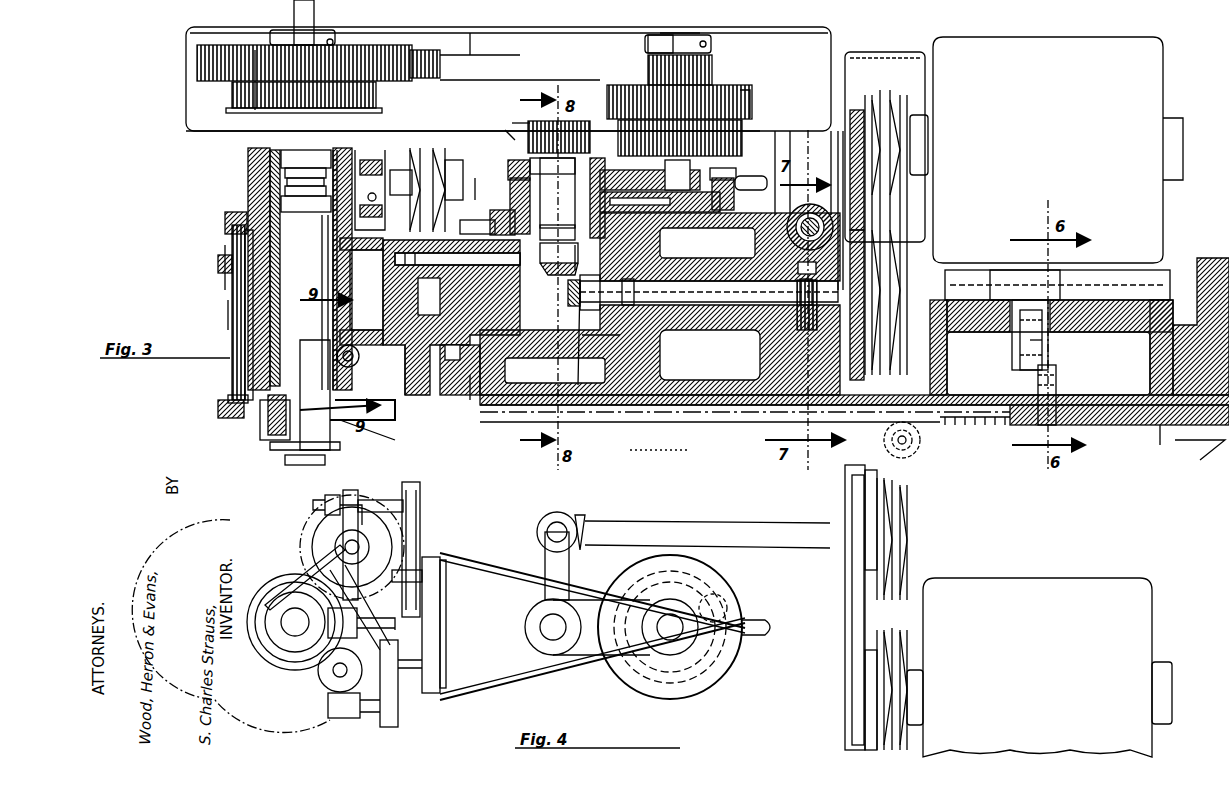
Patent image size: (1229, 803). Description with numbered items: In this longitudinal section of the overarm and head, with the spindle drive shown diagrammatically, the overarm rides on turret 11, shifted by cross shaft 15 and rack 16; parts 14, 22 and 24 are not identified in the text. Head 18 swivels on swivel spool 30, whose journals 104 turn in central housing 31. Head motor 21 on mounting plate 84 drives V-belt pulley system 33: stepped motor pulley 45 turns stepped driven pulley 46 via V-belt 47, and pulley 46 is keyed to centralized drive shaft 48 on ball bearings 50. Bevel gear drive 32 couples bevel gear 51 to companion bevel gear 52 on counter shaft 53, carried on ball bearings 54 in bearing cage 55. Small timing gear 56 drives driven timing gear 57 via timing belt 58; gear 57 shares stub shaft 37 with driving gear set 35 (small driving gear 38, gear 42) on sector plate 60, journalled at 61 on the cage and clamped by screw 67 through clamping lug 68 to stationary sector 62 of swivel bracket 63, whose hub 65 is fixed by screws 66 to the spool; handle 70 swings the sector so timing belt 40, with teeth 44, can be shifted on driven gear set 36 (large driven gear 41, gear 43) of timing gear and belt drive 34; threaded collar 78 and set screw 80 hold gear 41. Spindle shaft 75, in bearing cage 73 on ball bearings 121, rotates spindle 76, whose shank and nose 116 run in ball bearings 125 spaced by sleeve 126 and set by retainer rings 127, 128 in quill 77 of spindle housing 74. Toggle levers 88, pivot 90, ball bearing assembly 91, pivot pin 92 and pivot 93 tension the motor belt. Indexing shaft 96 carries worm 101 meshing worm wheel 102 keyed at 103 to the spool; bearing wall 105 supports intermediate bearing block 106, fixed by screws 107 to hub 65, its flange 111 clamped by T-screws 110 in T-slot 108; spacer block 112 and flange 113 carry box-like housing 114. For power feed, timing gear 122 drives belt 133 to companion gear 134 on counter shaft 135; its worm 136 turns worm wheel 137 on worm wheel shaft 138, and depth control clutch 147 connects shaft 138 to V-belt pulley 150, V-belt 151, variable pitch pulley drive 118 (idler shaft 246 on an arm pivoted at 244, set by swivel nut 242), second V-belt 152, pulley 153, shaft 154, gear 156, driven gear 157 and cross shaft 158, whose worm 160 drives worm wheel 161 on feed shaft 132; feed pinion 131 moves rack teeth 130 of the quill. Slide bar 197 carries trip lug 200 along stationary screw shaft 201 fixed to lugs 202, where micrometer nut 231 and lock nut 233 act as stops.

In FIG. 3, the turret 11 is at (1165, 447).
In FIG. 3, the guide rod 14 is at (920, 440).
In FIG. 3, the cross shaft 15 is at (918, 452).
In FIG. 3, the rack 16 is at (1000, 430).
In FIG. 3, the head 18 is at (245, 190).
In FIG. 3, the head motor 21 is at (1163, 90).
In FIG. 4, the head motor 21 is at (1078, 595).
In FIG. 3, the plate 22 is at (342, 448).
In FIG. 3, the shaft 24 is at (520, 145).
In FIG. 3, the swivel spool 30 is at (660, 350).
In FIG. 3, the central housing 31 is at (720, 247).
In FIG. 3, the bevel gear drive 32 is at (565, 285).
In FIG. 4, the bevel gear drive 32 is at (578, 555).
In FIG. 3, the V-belt pulley system 33 is at (912, 100).
In FIG. 4, the V-belt pulley system 33 is at (905, 578).
In FIG. 3, the timing gear and belt drive 34 is at (505, 50).
In FIG. 4, the timing gear and belt drive 34 is at (530, 688).
In FIG. 3, the driving gear set 35 is at (752, 90).
In FIG. 4, the driving gear set 35 is at (748, 615).
In FIG. 3, the driven gear set 36 is at (215, 40).
In FIG. 3, the stub shaft 37 is at (690, 35).
In FIG. 4, the stub shaft 37 is at (655, 633).
In FIG. 3, the small driving gear 38 is at (650, 68).
In FIG. 4, the small driving gear 38 is at (690, 640).
In FIG. 3, the timing belt 40 is at (530, 62).
In FIG. 4, the timing belt 40 is at (490, 565).
In FIG. 3, the large driven gear 41 is at (257, 45).
In FIG. 4, the large driven gear 41 is at (272, 722).
In FIG. 3, the gear 42 is at (752, 108).
In FIG. 3, the gear 43 is at (378, 98).
In FIG. 3, the teeth 44 is at (440, 60).
In FIG. 3, the stepped motor pulley 45 is at (880, 95).
In FIG. 4, the stepped motor pulley 45 is at (895, 650).
In FIG. 3, the stepped driven pulley 46 is at (910, 238).
In FIG. 4, the stepped driven pulley 46 is at (900, 552).
In FIG. 3, the V-belt 47 is at (866, 218).
In FIG. 4, the V-belt 47 is at (860, 623).
In FIG. 3, the centralized drive shaft 48 is at (709, 291).
In FIG. 4, the centralized drive shaft 48 is at (725, 535).
In FIG. 3, the ball bearings 50 is at (634, 293).
In FIG. 3, the bevel gear 51 is at (594, 292).
In FIG. 4, the bevel gear 51 is at (585, 518).
In FIG. 3, the companion bevel gear 52 is at (559, 259).
In FIG. 4, the companion bevel gear 52 is at (540, 522).
In FIG. 3, the counter shaft 53 is at (552, 193).
In FIG. 4, the counter shaft 53 is at (570, 560).
In FIG. 3, the ball bearings 54 is at (512, 178).
In FIG. 3, the bearing cage 55 is at (508, 186).
In FIG. 3, the small timing gear 56 is at (540, 122).
In FIG. 4, the small timing gear 56 is at (535, 640).
In FIG. 3, the driven timing gear 57 is at (742, 134).
In FIG. 4, the driven timing gear 57 is at (725, 590).
In FIG. 3, the timing belt 58 is at (515, 122).
In FIG. 4, the timing belt 58 is at (555, 660).
In FIG. 3, the sector plate 60 is at (490, 160).
In FIG. 4, the sector plate 60 is at (725, 682).
In FIG. 3, the journal 61 is at (608, 172).
In FIG. 3, the stationary sector 62 is at (707, 243).
In FIG. 3, the swivel bracket 63 is at (600, 232).
In FIG. 3, the right angular hub 65 is at (598, 390).
In FIG. 3, the screws 66 is at (687, 352).
In FIG. 4, the clamping screw 67 is at (730, 600).
In FIG. 3, the clamping lug 68 is at (733, 189).
In FIG. 3, the handle 70 is at (752, 176).
In FIG. 4, the handle 70 is at (768, 630).
In FIG. 3, the bearing cage 73 is at (252, 155).
In FIG. 3, the spindle housing 74 is at (266, 165).
In FIG. 4, the spindle shaft 75 is at (300, 610).
In FIG. 3, the spindle 76 is at (262, 285).
In FIG. 3, the spindle quill 77 is at (262, 370).
In FIG. 4, the spindle quill 77 is at (270, 640).
In FIG. 3, the threaded collar 78 is at (285, 35).
In FIG. 3, the set screw 80 is at (334, 42).
In FIG. 3, the mounting plate 84 is at (1150, 262).
In FIG. 3, the toggle levers 88 is at (1060, 352).
In FIG. 3, the intermediate pivot 90 is at (1030, 345).
In FIG. 3, the ball bearing assembly 91 is at (1040, 352).
In FIG. 3, the pivot pin 92 is at (1098, 290).
In FIG. 3, the pivot 93 is at (1058, 378).
In FIG. 3, the indexing shaft 96 is at (806, 212).
In FIG. 3, the worm 101 is at (820, 200).
In FIG. 3, the worm wheel 102 is at (858, 378).
In FIG. 3, the key 103 is at (798, 266).
In FIG. 3, the concentric journals 104 is at (800, 385).
In FIG. 3, the vertical bearing wall 105 is at (854, 418).
In FIG. 3, the intermediate bearing block 106 is at (470, 340).
In FIG. 3, the screws 107 is at (460, 370).
In FIG. 3, the circular T-slot 108 is at (555, 370).
In FIG. 3, the T-screws 110 is at (490, 215).
In FIG. 3, the flange 111 is at (466, 394).
In FIG. 3, the spacer block 112 is at (430, 380).
In FIG. 3, the flange 113 is at (385, 400).
In FIG. 3, the box-like housing 114 is at (372, 433).
In FIG. 3, the nose 116 is at (305, 467).
In FIG. 3, the variable pitch V-belt drive 118 is at (440, 148).
In FIG. 4, the variable pitch V-belt drive 118 is at (448, 598).
In FIG. 3, the ball bearings 121 is at (295, 160).
In FIG. 3, the timing gear 122 is at (285, 182).
In FIG. 4, the timing gear 122 is at (276, 605).
In FIG. 3, the ball bearings 125 is at (268, 415).
In FIG. 3, the sleeve 126 is at (260, 385).
In FIG. 3, the retainer ring 127 is at (300, 165).
In FIG. 3, the retainer ring 128 is at (268, 442).
In FIG. 3, the rack teeth 130 is at (315, 395).
In FIG. 3, the feed pinion 131 is at (333, 345).
In FIG. 4, the feed pinion 131 is at (372, 608).
In FIG. 3, the feed shaft 132 is at (337, 356).
In FIG. 4, the feed shaft 132 is at (335, 690).
In FIG. 3, the belt 133 is at (365, 160).
In FIG. 4, the belt 133 is at (280, 600).
In FIG. 4, the companion gear 134 is at (325, 548).
In FIG. 4, the counter shaft 135 is at (340, 540).
In FIG. 4, the worm 136 is at (345, 545).
In FIG. 4, the worm wheel 137 is at (350, 490).
In FIG. 4, the worm wheel shaft 138 is at (378, 500).
In FIG. 4, the depth control clutch 147 is at (325, 498).
In FIG. 4, the V-belt pulley 150 is at (422, 512).
In FIG. 4, the V-belt 151 is at (420, 540).
In FIG. 4, the second V-belt 152 is at (440, 623).
In FIG. 4, the V-belt pulley 153 is at (442, 676).
In FIG. 4, the shaft 154 is at (415, 690).
In FIG. 4, the gear 156 is at (390, 640).
In FIG. 4, the driven gear 157 is at (390, 727).
In FIG. 4, the cross shaft 158 is at (372, 725).
In FIG. 4, the worm 160 is at (337, 718).
In FIG. 4, the worm wheel 161 is at (325, 670).
In FIG. 3, the slide bar 197 is at (232, 298).
In FIG. 3, the trip lug 200 is at (218, 264).
In FIG. 3, the stationary screw shaft 201 is at (232, 310).
In FIG. 3, the lugs 202 is at (225, 224).
In FIG. 3, the micrometer nut 231 is at (226, 402).
In FIG. 3, the lock nut 233 is at (230, 410).
In FIG. 3, the swivel nut 242 is at (400, 168).
In FIG. 3, the pivotal connection 244 is at (362, 291).
In FIG. 3, the idler shaft 246 is at (462, 160).
In FIG. 4, the idler shaft 246 is at (430, 580).